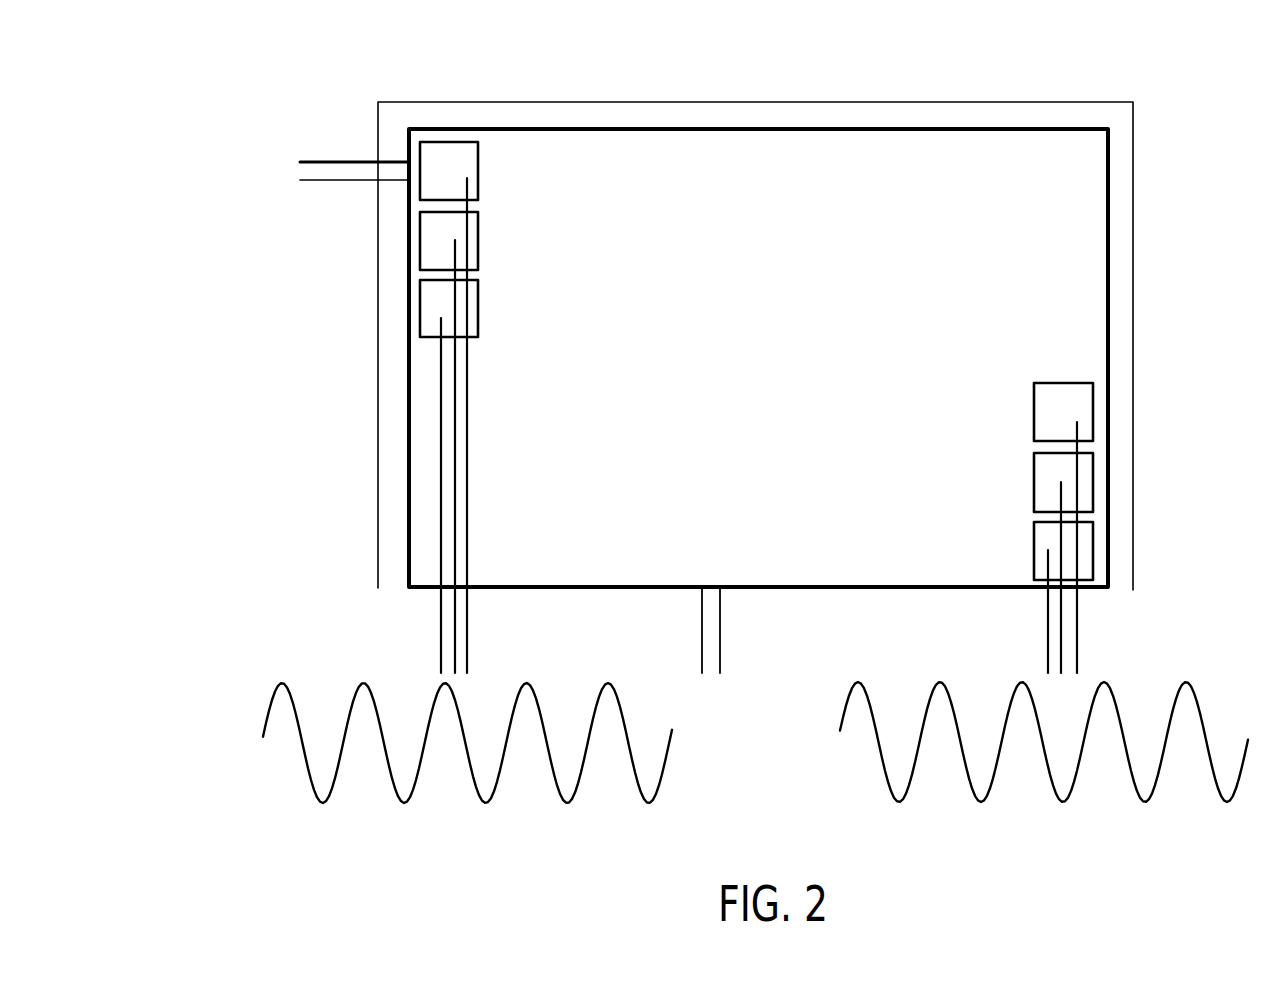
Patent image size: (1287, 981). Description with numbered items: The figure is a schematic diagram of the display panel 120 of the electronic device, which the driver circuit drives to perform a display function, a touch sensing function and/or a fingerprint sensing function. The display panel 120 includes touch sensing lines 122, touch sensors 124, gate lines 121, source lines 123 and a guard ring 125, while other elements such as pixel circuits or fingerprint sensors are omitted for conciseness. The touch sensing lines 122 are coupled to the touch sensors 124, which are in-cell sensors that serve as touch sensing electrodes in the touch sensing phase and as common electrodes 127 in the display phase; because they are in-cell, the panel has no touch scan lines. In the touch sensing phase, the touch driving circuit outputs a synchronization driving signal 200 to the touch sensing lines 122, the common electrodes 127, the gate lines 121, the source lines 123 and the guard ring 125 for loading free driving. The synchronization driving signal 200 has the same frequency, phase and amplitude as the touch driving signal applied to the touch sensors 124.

The display panel 120 is at (923, 127).
The gate lines 121 is at (323, 160).
The touch sensing lines 122 is at (440, 632).
The source lines 123 is at (722, 636).
The touch sensors 124 is at (448, 180).
The common electrodes 127 is at (445, 142).
The guard ring 125 is at (1040, 101).
The synchronization driving signal 200 is at (268, 700).